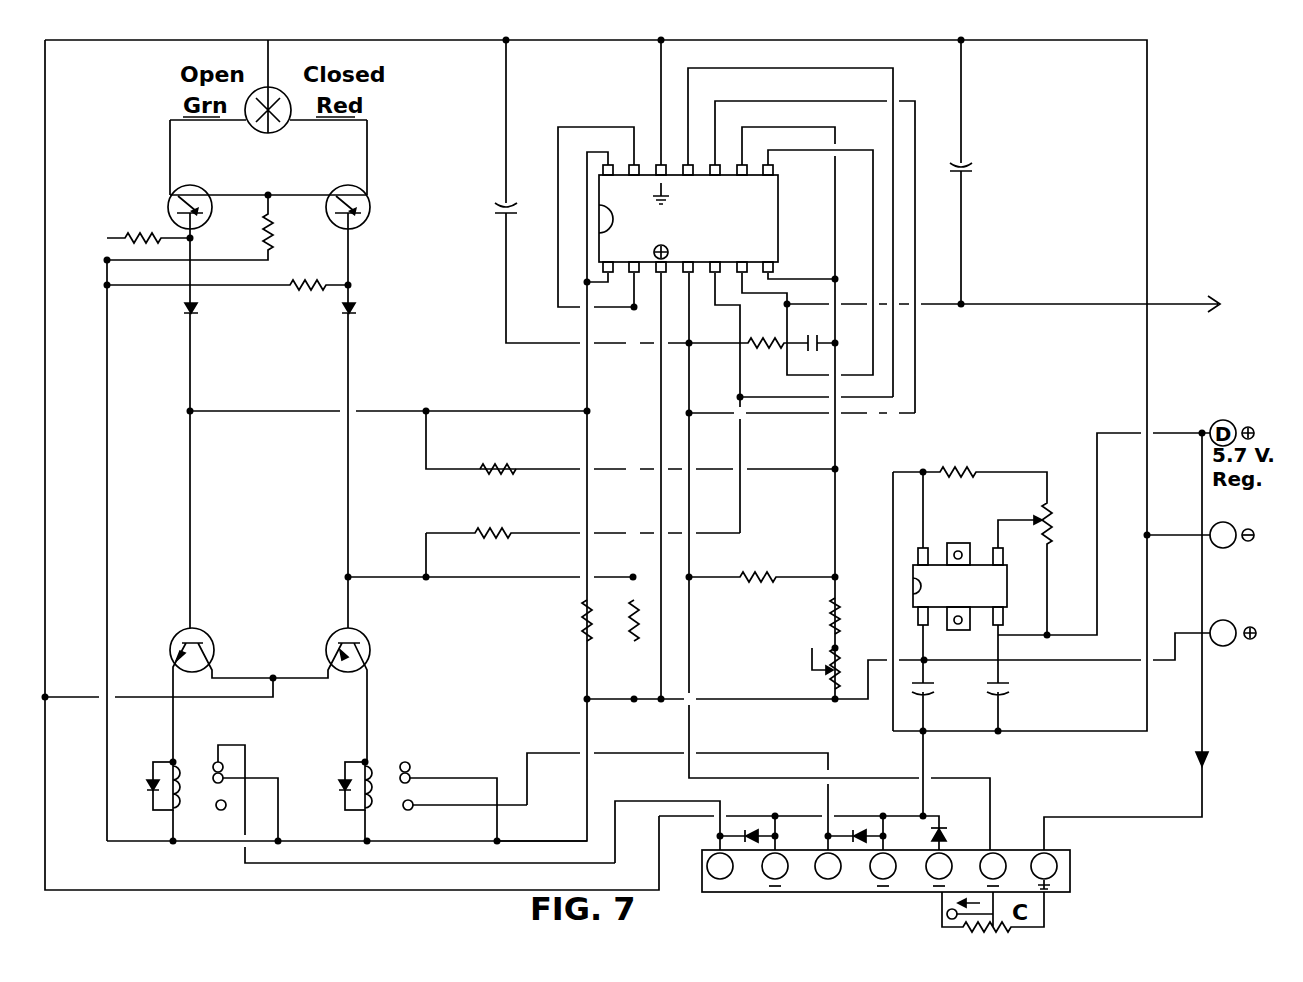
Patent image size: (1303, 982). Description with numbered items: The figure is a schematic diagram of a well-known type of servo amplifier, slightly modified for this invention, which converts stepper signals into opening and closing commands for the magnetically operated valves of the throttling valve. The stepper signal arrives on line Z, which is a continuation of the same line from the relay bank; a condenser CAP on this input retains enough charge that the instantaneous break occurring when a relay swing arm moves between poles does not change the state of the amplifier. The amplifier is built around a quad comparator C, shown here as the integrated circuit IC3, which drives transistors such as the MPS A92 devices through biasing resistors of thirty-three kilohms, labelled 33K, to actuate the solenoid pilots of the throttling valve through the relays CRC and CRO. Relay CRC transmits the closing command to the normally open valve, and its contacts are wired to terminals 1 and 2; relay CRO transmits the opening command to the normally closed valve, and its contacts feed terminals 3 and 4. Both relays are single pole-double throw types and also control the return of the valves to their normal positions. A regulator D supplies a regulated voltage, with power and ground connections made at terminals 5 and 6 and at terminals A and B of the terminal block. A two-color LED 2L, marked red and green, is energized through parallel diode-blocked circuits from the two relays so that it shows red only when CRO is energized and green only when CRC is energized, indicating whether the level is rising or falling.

The two-color LED 2L is at (279, 128).
The integrated circuit IC3 is at (778, 212).
The condenser CAP is at (968, 166).
The 33K resistor 33K is at (227, 248).
The MPS A92 transistor A92 is at (302, 691).
The closing command relay CRC is at (366, 797).
The opening command relay CRO is at (418, 786).
The voltage regulator D is at (949, 601).
The line Z is at (1027, 328).
The terminal 5 negative 5 is at (1200, 535).
The terminal 6 positive 6 is at (1233, 633).
The terminal 1 is at (720, 873).
The terminal 2 is at (775, 869).
The terminal 3 is at (828, 873).
The terminal 4 is at (883, 869).
The quad comparator C is at (939, 869).
The terminal B is at (993, 869).
The terminal A is at (1044, 871).